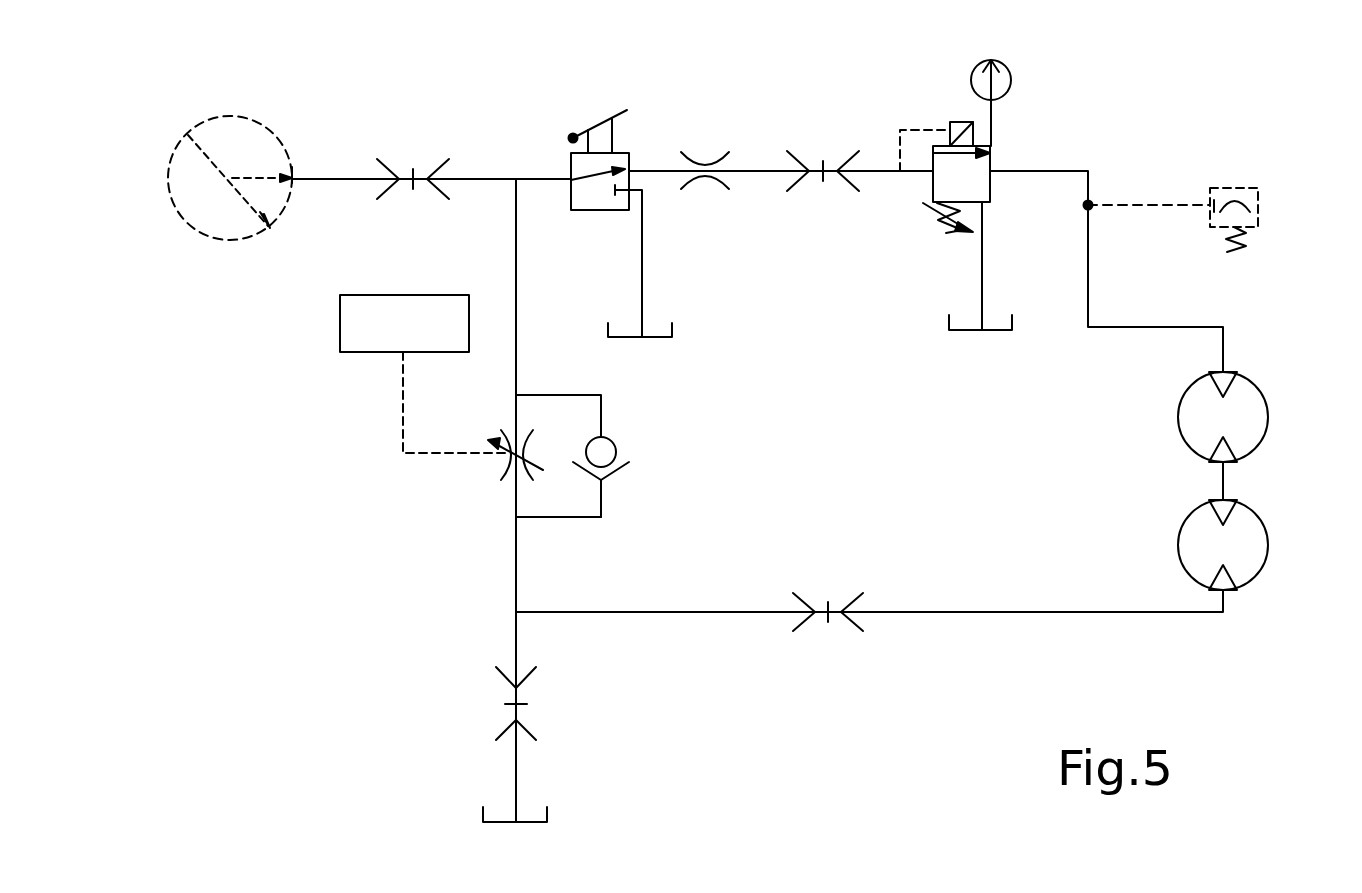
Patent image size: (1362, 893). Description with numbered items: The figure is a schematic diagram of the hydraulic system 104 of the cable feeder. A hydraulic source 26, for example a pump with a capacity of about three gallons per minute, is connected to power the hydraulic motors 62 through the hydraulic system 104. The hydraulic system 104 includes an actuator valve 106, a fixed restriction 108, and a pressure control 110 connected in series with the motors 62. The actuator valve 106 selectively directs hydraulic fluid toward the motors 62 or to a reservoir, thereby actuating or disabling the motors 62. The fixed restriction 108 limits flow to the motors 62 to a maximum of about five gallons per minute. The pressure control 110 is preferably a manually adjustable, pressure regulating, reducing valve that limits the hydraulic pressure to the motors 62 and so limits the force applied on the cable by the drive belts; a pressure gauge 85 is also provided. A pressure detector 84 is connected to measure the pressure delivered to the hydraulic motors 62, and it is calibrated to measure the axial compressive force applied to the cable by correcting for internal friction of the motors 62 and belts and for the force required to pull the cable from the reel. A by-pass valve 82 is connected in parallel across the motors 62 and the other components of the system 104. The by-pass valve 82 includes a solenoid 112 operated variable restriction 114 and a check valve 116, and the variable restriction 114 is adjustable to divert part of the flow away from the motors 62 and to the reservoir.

The hydraulic source 26 is at (267, 130).
The actuator valve 106 is at (571, 158).
The fixed restriction 108 is at (719, 158).
The pressure gauge 85 is at (996, 62).
The pressure control 110 is at (992, 154).
The pressure detector 84 is at (1255, 188).
The hydraulic motors 62 is at (1268, 400).
The solenoid 112 is at (378, 295).
The variable restriction 114 is at (503, 465).
The check valve 116 is at (607, 440).
The by-pass valve 82 is at (549, 497).
The hydraulic system 104 is at (798, 685).